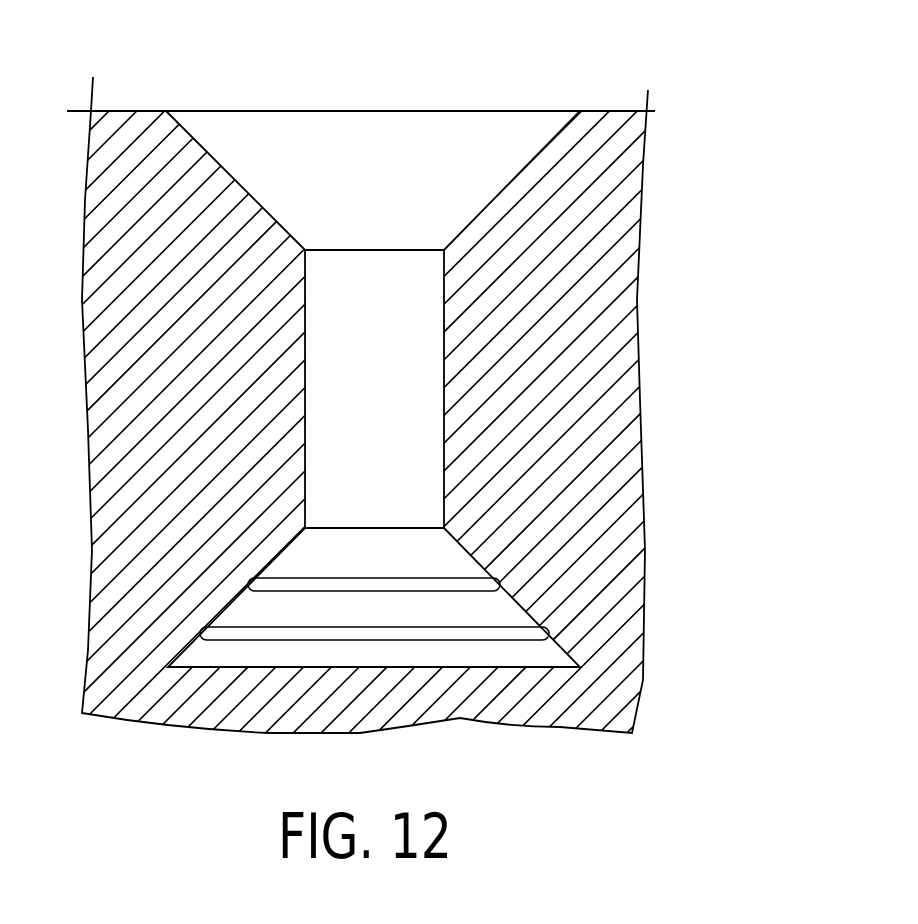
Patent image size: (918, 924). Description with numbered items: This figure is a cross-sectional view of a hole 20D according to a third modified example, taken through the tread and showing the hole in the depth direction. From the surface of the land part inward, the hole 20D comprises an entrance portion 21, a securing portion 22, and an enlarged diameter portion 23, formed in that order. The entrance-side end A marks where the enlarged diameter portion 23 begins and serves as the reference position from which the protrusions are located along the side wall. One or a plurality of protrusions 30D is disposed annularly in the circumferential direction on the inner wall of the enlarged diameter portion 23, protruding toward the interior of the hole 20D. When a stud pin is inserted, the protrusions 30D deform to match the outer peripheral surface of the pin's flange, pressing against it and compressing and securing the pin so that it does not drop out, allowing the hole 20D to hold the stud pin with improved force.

The hole 20D is at (553, 56).
The entrance portion 21 is at (508, 159).
The securing portion 22 is at (412, 353).
The enlarged diameter portion 23 is at (407, 555).
The entrance-side end of the enlarged diameter portion A is at (400, 528).
The protrusions 30D is at (273, 585).